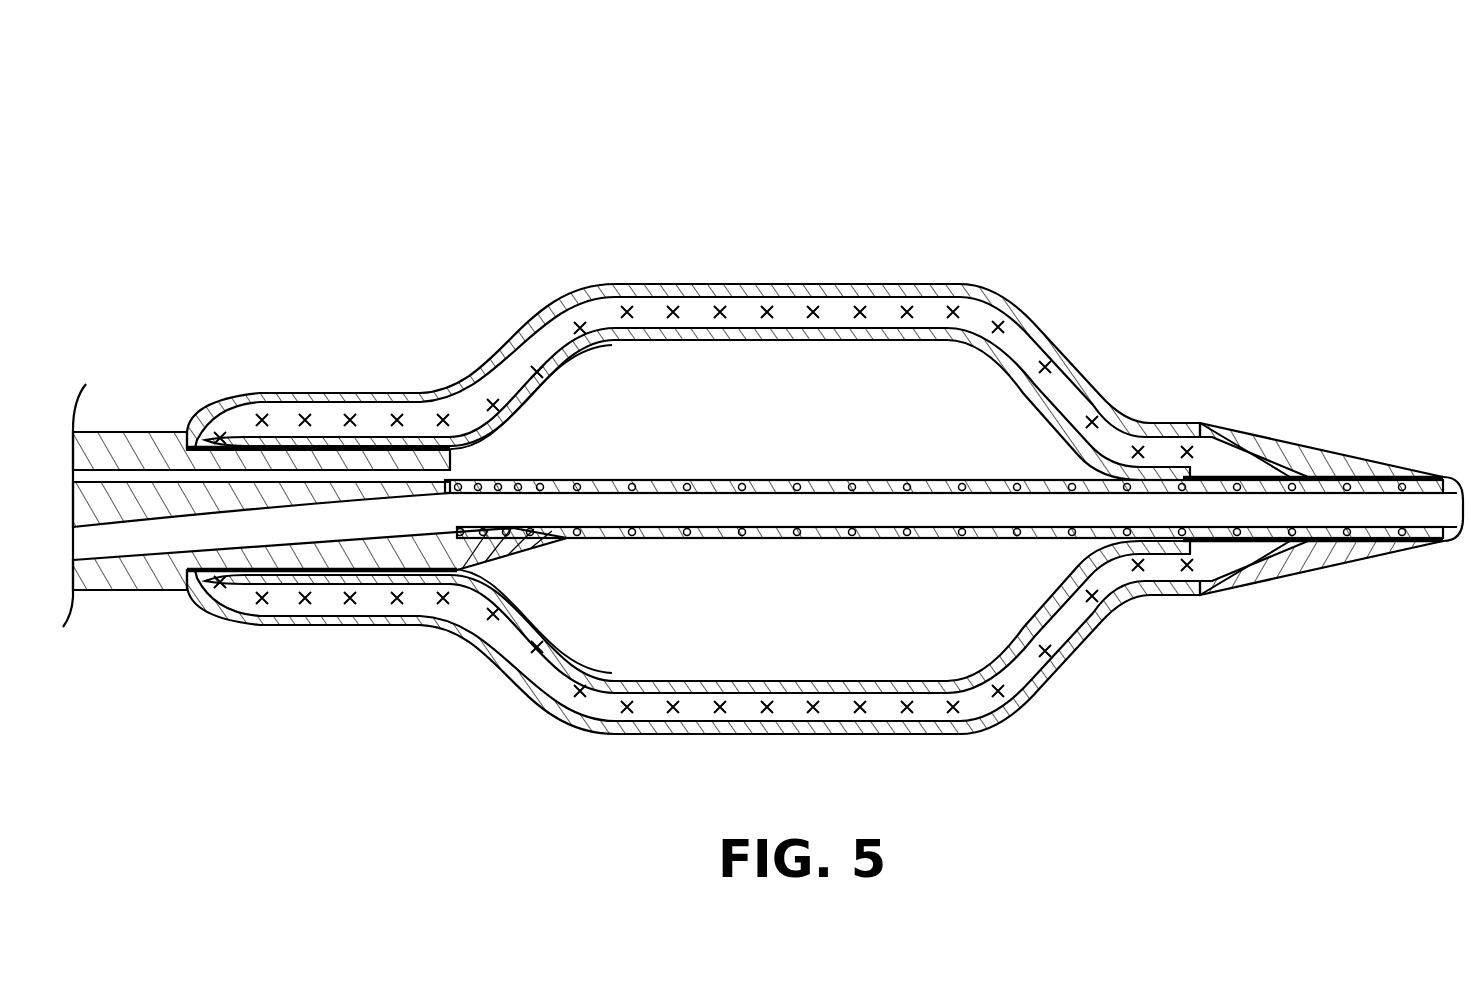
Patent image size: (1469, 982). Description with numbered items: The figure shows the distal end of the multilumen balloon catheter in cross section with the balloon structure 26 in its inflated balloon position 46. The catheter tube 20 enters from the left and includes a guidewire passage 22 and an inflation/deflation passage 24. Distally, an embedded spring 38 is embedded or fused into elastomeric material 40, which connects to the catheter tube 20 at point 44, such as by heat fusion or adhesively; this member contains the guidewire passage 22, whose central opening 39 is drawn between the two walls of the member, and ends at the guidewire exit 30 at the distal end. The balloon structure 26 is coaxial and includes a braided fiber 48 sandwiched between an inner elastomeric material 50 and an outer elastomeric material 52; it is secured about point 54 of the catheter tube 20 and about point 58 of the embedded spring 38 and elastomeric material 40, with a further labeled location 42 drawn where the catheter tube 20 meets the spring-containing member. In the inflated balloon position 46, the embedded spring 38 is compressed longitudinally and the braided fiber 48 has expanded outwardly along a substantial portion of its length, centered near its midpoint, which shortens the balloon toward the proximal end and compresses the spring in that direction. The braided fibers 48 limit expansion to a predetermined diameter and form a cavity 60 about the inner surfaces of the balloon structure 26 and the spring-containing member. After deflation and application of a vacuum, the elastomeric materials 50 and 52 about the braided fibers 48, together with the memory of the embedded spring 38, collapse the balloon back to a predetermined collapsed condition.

The catheter tube 20 is at (98, 432).
The guidewire passage 22 is at (140, 547).
The inflation/deflation passage 24 is at (118, 478).
The balloon structure 26 is at (820, 200).
The guidewire exit 30 is at (1455, 510).
The embedded spring 38 is at (687, 486).
The guidewire lumen 39 is at (857, 555).
The elastomeric material 40 is at (783, 483).
The proximal joint 42 is at (450, 480).
The point 44 is at (477, 552).
The inflated balloon position 46 is at (1057, 255).
The braided fiber 48 is at (697, 308).
The inner elastomeric material 50 is at (963, 338).
The outer elastomeric material 52 is at (868, 287).
The point 54 is at (408, 447).
The point 58 is at (1337, 457).
The cavity 60 is at (745, 609).